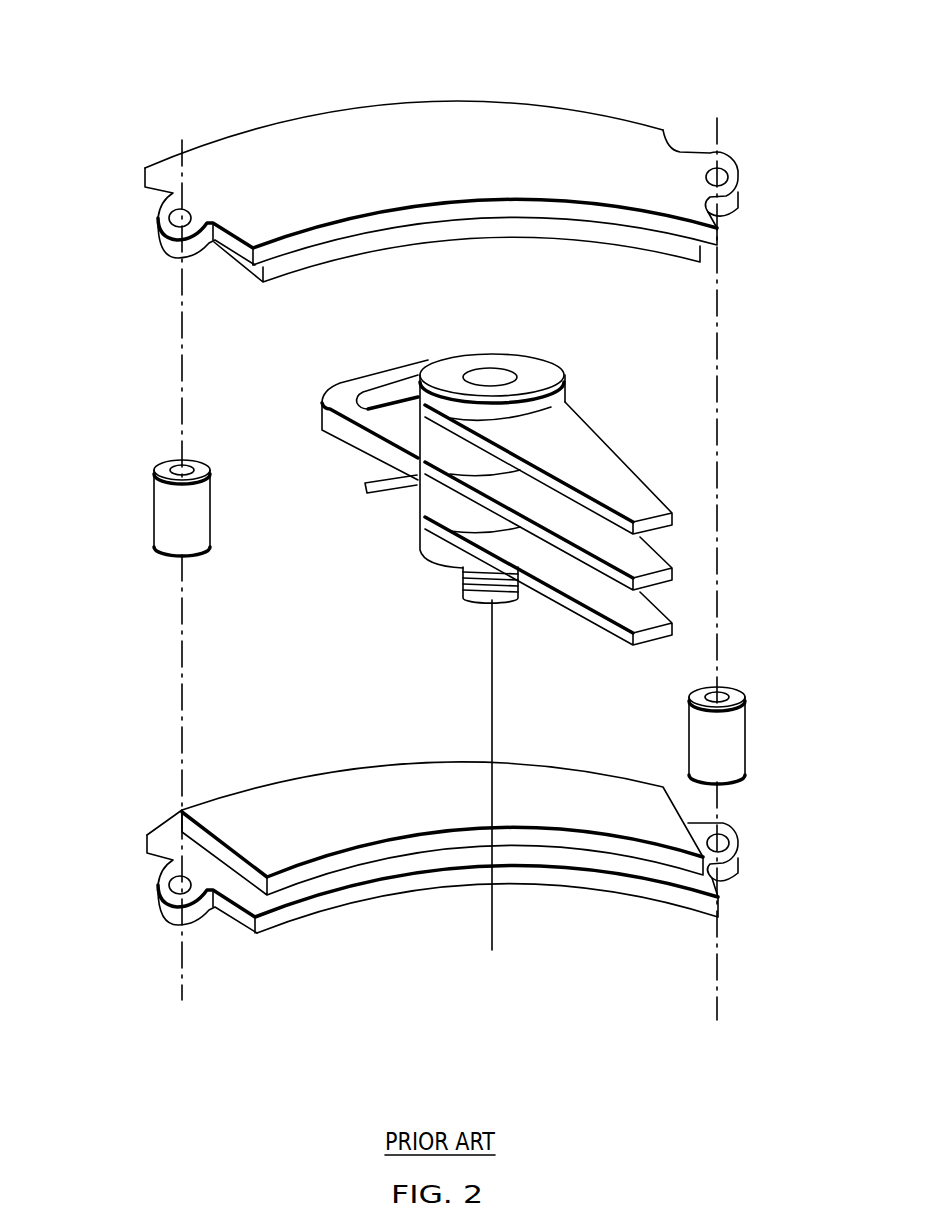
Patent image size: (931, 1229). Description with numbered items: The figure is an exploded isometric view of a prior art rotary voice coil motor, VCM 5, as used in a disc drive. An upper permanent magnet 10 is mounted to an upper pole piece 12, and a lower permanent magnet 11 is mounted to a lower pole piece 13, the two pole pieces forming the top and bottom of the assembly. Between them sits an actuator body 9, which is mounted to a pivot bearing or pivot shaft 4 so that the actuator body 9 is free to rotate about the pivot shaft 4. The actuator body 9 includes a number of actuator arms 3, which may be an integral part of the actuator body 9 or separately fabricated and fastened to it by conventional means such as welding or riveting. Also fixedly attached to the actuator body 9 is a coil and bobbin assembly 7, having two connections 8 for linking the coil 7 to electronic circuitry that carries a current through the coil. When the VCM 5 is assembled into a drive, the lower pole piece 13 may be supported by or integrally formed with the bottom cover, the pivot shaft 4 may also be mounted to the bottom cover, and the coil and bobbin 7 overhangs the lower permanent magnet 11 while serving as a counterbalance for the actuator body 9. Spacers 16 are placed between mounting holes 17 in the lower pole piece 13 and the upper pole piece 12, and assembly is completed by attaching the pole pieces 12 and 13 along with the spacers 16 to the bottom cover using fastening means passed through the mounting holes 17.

The actuator arms 3 is at (673, 572).
The pivot shaft 4 is at (497, 377).
The VCM 5 is at (173, 58).
The coil and bobbin assembly 7 is at (338, 392).
The connections 8 is at (367, 493).
The actuator body 9 is at (552, 375).
The upper permanent magnet 10 is at (692, 252).
The lower permanent magnet 11 is at (687, 865).
The upper pole piece 12 is at (637, 142).
The lower pole piece 13 is at (708, 903).
The spacers 16 is at (162, 502).
The mounting holes 17 is at (172, 218).